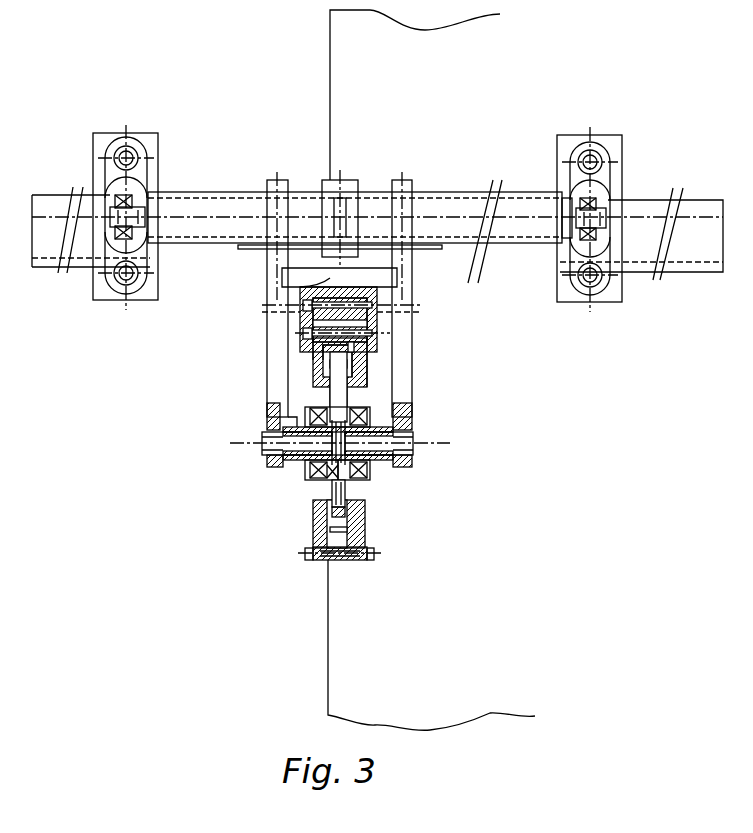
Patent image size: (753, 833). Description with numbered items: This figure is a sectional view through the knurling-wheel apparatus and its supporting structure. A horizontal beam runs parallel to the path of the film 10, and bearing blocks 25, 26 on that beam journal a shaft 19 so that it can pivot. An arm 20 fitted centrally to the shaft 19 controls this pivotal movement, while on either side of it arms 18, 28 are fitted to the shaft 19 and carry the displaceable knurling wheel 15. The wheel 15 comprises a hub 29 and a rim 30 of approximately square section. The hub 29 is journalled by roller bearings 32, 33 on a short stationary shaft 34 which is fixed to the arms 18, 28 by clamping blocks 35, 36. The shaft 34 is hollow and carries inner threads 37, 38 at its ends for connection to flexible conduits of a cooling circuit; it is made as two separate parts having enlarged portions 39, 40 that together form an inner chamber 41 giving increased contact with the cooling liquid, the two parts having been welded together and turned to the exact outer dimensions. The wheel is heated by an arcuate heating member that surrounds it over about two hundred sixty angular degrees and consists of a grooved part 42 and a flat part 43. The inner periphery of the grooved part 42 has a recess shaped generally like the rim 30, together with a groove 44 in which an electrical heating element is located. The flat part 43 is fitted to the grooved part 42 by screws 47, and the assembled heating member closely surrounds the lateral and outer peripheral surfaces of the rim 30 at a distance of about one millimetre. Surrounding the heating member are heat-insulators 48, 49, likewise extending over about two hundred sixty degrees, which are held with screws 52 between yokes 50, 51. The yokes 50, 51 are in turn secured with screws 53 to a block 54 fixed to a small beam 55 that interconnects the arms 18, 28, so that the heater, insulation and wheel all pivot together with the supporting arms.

The film 10 is at (343, 42).
The displaceable knurling wheel 15 is at (335, 395).
The arm 18 is at (277, 180).
The shaft 19 is at (447, 198).
The arm 20 is at (342, 203).
The bearing block 25 is at (133, 190).
The bearing block 26 is at (600, 195).
The arm 28 is at (407, 180).
The hub 29 is at (348, 488).
The rim 30 is at (365, 518).
The roller bearing 32 is at (320, 472).
The roller bearing 33 is at (370, 470).
The short stationary shaft 34 is at (295, 457).
The clamping block 35 is at (270, 462).
The clamping block 36 is at (410, 465).
The inner thread 37 is at (265, 436).
The inner thread 38 is at (415, 438).
The enlarged portion 39 is at (332, 478).
The enlarged portion 40 is at (348, 505).
The inner chamber 41 is at (400, 420).
The grooved part 42 is at (318, 378).
The flat part 43 is at (352, 392).
The groove 44 is at (368, 375).
The screw 47 is at (368, 360).
The heat-insulator 48 is at (318, 358).
The heat-insulator 49 is at (355, 348).
The yoke 50 is at (302, 318).
The yoke 51 is at (380, 318).
The screw 52 is at (303, 335).
The screw 53 is at (303, 305).
The block 54 is at (292, 286).
The small beam 55 is at (392, 275).